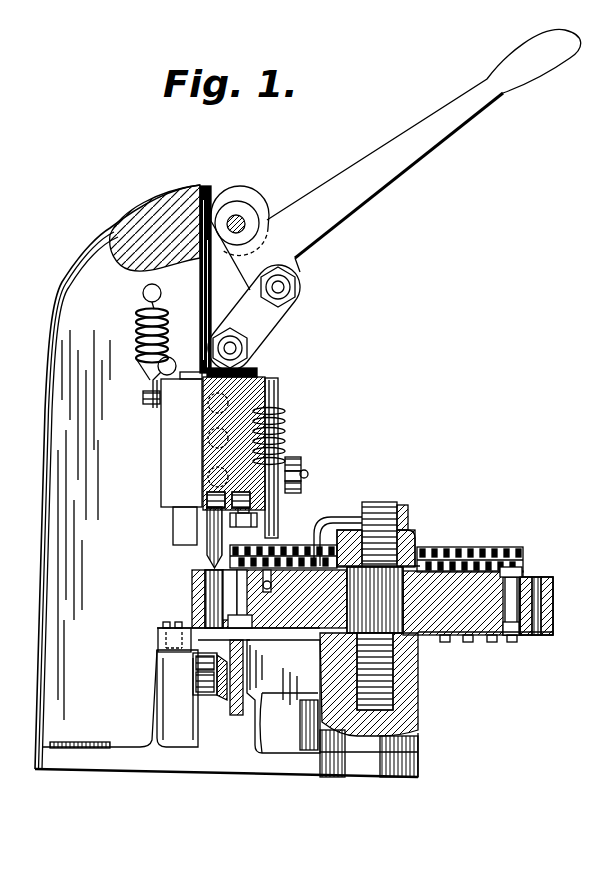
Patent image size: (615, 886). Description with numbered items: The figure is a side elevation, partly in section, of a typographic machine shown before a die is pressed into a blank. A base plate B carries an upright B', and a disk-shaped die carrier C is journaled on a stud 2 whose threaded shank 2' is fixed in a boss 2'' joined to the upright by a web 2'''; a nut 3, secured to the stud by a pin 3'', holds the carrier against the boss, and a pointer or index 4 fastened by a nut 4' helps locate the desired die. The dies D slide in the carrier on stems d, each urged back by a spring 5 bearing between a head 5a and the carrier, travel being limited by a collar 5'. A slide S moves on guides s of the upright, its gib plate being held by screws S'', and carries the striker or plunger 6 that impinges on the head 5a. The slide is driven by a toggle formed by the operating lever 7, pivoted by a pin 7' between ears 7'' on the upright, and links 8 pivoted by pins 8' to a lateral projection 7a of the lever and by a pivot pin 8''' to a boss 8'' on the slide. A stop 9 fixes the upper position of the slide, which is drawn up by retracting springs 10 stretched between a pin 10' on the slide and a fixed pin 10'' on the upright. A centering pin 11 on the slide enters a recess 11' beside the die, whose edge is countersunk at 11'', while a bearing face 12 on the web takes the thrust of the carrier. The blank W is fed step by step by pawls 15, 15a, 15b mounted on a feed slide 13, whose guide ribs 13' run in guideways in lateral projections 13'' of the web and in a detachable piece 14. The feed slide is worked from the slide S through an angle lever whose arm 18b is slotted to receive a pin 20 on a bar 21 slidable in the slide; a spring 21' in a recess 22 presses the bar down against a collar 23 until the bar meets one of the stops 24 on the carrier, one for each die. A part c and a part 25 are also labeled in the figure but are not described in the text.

The operating handle or lever 7 is at (424, 143).
The pin 7' is at (255, 206).
The projecting ears 7'' is at (240, 205).
The laterally projecting portion of the operating lever 7a is at (257, 281).
The links 8 is at (255, 317).
The pin 8' is at (293, 287).
The boss on the slide 8'' is at (252, 365).
The pivot pin 8''' is at (257, 348).
The stop 9 is at (159, 369).
The retracting springs 10 is at (134, 341).
The pin on the slide 10' is at (141, 412).
The fixed pin 10'' is at (134, 293).
The pin 11 is at (190, 538).
The recess 11' is at (376, 599).
The countersink 11'' is at (371, 588).
The bearing face 12 is at (270, 652).
The feed slide 13 is at (197, 688).
The guide ribs 13' is at (178, 698).
The lateral projections of the web 13'' is at (283, 696).
The detachable piece 14 is at (160, 628).
The pawl 15 is at (196, 695).
The pawl 15a is at (196, 681).
The pawl 15b is at (196, 665).
The arm of the angle lever 18b is at (302, 488).
The pin 20 is at (309, 475).
The bar 21 is at (290, 458).
The spring 21' is at (290, 433).
The recess 22 is at (248, 428).
The collar 23 is at (302, 461).
The stops 24 is at (280, 547).
The pin 25 is at (272, 581).
The stud 2 is at (375, 600).
The threaded shank 2' is at (382, 705).
The boss 2'' is at (409, 603).
The web 2''' is at (277, 686).
The nut 3 is at (389, 551).
The pin 3'' is at (382, 539).
The pointer or index 4 is at (338, 532).
The nut 4' is at (408, 509).
The spring 5 is at (387, 589).
The head 5a is at (513, 567).
The shoulder-forming collar 5' is at (521, 639).
The striker or plunger 6 is at (242, 518).
The base plate B is at (226, 702).
The upright B' is at (108, 477).
The die carrier C is at (549, 606).
The dies D is at (466, 641).
The slide S is at (160, 439).
The screws S'' is at (217, 443).
The guides s is at (174, 527).
The blank W is at (237, 716).
The channel c is at (246, 594).
The stem or shank d is at (542, 590).